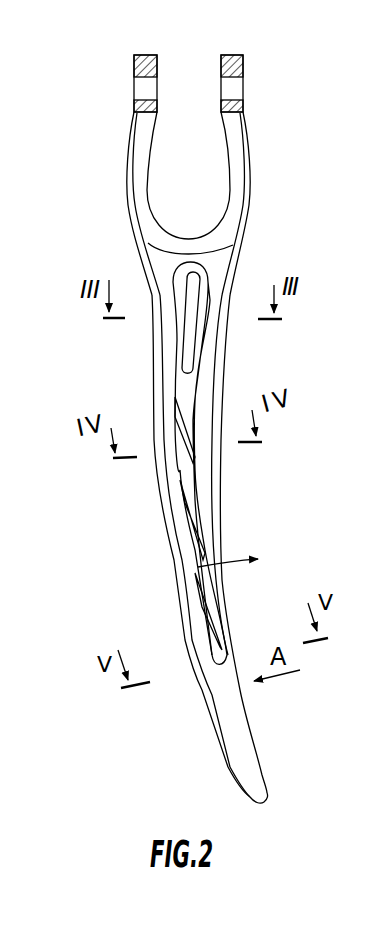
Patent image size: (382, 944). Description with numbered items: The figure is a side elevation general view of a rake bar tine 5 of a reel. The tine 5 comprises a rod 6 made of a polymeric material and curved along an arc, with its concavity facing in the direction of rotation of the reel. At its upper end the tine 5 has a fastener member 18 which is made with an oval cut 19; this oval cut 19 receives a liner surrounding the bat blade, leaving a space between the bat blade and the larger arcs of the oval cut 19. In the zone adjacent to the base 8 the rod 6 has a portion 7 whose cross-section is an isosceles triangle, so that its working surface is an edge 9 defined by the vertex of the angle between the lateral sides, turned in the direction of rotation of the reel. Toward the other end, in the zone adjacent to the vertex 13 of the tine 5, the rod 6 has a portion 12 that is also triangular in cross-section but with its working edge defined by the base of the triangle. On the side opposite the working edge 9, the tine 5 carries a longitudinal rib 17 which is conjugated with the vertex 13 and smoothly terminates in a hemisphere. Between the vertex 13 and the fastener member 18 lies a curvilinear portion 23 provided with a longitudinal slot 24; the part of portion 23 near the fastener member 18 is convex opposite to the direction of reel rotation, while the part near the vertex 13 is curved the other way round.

The tine 5 is at (107, 536).
The rod 6 is at (193, 495).
The portion 7 is at (215, 259).
The base 8 is at (160, 248).
The working edge 9 is at (223, 519).
The portion 12 is at (255, 763).
The vertex 13 is at (266, 803).
The longitudinal rib 17 is at (186, 627).
The fastener member 18 is at (227, 55).
The oval cut 19 is at (185, 114).
The portion 23 is at (172, 333).
The longitudinal slot 24 is at (190, 355).